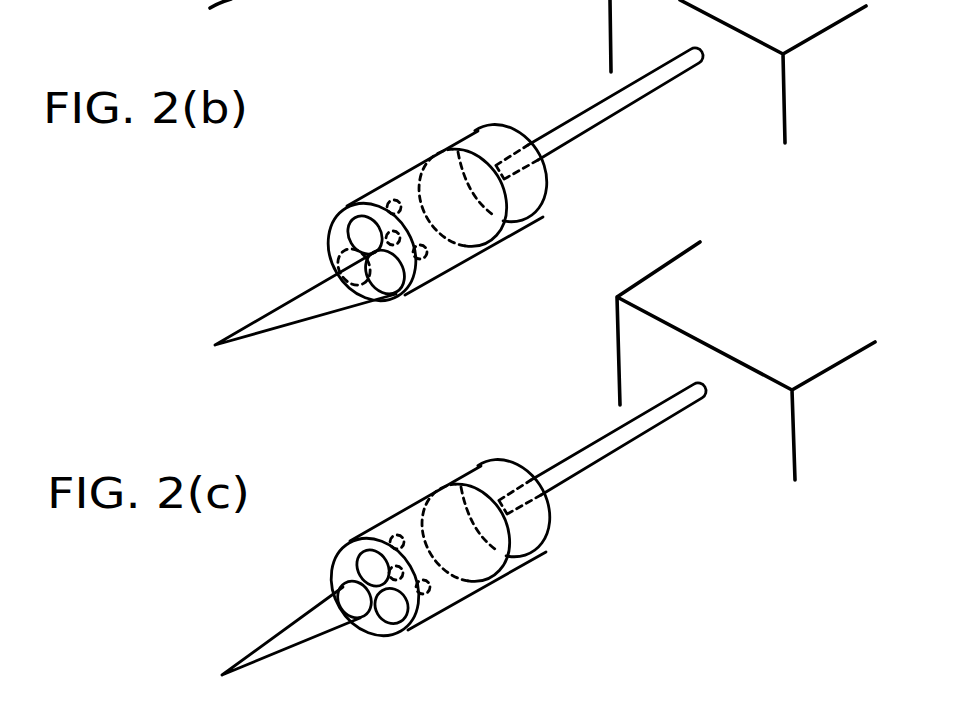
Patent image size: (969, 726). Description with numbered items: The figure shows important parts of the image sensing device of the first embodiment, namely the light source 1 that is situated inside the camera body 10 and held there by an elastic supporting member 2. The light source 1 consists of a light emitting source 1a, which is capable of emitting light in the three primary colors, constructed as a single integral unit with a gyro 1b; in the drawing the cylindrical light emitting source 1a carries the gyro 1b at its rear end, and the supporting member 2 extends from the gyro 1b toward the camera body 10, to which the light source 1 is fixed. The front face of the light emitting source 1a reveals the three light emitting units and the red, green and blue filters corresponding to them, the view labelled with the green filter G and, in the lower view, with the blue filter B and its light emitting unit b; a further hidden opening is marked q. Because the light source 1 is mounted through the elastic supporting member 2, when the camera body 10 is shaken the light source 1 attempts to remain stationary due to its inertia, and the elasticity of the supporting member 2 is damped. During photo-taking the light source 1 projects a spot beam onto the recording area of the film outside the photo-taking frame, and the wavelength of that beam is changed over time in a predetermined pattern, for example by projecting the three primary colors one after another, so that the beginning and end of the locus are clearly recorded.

In FIG. 2B, the light source 1 is at (385, 207).
In FIG. 2C, the light source 1 is at (390, 548).
In FIG. 2B, the light emitting source 1a is at (387, 184).
In FIG. 2C, the light emitting source 1a is at (430, 555).
In FIG. 2B, the gyro 1b is at (485, 125).
In FIG. 2C, the gyro 1b is at (506, 473).
In FIG. 2B, the elastic supporting member 2 is at (632, 106).
In FIG. 2C, the elastic supporting member 2 is at (602, 454).
In FIG. 2C, the camera body 10 is at (657, 297).
In FIG. 2B, the green filter G is at (388, 272).
In FIG. 2B, the hidden hole q is at (423, 301).
In FIG. 2C, the blue filter B is at (349, 614).
In FIG. 2C, the light emitting unit b is at (384, 628).